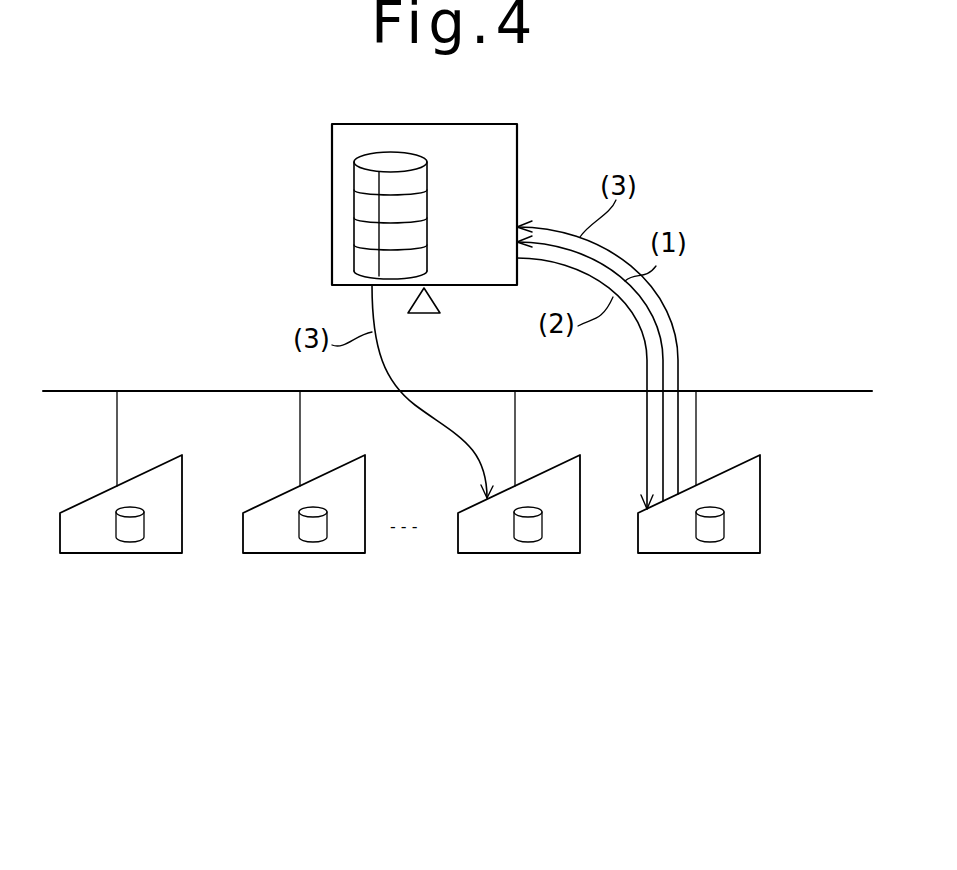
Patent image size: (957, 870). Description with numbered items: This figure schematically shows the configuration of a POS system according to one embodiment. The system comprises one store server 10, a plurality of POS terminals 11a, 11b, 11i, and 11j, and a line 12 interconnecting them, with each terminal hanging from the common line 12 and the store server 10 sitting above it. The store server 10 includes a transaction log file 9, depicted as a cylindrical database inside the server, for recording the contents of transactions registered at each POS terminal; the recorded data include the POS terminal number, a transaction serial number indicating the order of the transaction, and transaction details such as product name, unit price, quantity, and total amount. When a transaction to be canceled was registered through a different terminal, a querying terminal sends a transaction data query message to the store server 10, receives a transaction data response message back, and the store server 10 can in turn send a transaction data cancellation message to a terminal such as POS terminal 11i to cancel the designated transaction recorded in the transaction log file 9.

The transaction log file 9 is at (354, 228).
The store server 10 is at (517, 157).
The POS terminal 11a is at (123, 553).
The POS terminal 11b is at (306, 553).
The POS terminal 11i is at (521, 553).
The POS terminal 11j is at (701, 553).
The line 12 is at (740, 391).